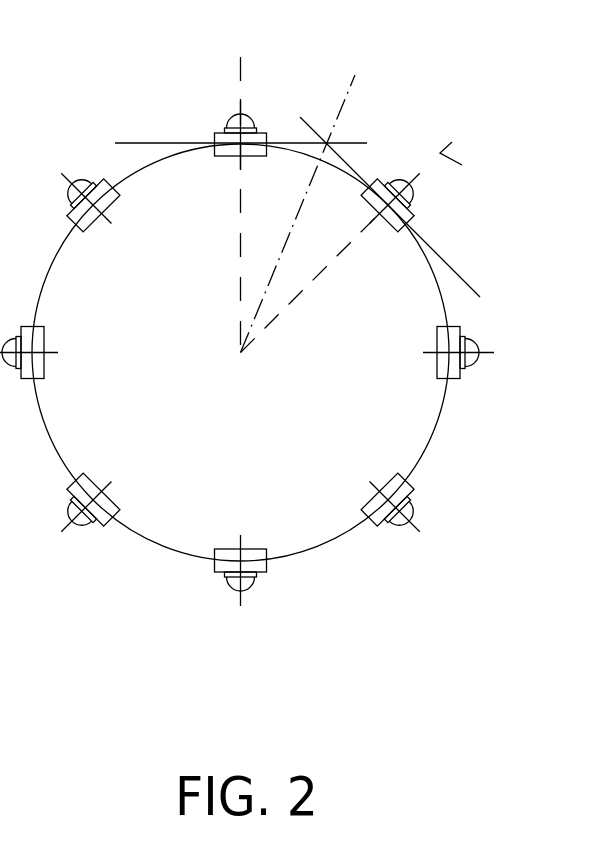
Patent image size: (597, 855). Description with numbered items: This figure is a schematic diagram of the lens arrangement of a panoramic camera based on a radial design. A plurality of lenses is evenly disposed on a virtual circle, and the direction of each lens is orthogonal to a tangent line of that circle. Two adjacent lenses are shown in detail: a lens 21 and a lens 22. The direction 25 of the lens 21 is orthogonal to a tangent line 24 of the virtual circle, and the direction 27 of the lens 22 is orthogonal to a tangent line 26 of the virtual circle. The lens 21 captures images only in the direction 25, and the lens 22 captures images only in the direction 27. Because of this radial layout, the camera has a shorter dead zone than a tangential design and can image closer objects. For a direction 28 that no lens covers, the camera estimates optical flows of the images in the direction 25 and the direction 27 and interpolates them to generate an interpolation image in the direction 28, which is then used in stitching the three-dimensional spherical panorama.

The lens 21 is at (220, 131).
The lens 22 is at (413, 208).
The tangent line 24 is at (145, 141).
The direction 25 is at (245, 65).
The tangent line 26 is at (450, 265).
The direction 27 is at (476, 160).
The direction 28 is at (348, 99).